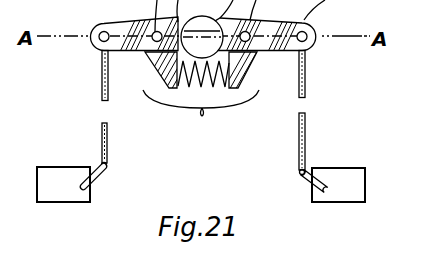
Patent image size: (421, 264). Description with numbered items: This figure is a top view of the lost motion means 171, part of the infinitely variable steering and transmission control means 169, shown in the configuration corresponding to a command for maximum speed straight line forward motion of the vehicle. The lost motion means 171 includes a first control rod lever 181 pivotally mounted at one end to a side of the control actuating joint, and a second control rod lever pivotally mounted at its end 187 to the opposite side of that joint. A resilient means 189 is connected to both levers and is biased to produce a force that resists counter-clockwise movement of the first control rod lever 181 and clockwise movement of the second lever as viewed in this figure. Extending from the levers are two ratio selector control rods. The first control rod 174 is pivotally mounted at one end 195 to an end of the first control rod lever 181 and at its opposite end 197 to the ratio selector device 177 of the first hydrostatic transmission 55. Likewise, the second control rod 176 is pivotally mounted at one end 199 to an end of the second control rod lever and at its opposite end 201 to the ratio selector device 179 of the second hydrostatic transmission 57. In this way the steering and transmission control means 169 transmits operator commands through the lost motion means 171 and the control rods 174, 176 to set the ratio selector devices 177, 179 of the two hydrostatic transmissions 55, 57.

The first hydrostatic transmission 55 is at (52, 203).
The second hydrostatic transmission 57 is at (350, 193).
The infinitely variable steering and transmission control means 169 is at (238, 173).
The lost motion means 171 is at (199, 94).
The first control rod 174 is at (101, 87).
The second control rod 176 is at (307, 85).
The ratio selector device 177 is at (100, 177).
The ratio selector device 179 is at (307, 185).
The first control rod lever 181 is at (116, 19).
The end of second control rod lever 187 is at (236, 34).
The resilient means 189 is at (243, 69).
The end of first control rod 195 is at (98, 42).
The opposite end of first control rod 197 is at (100, 164).
The end of second control rod 199 is at (308, 47).
The opposite end of second control rod 201 is at (308, 171).